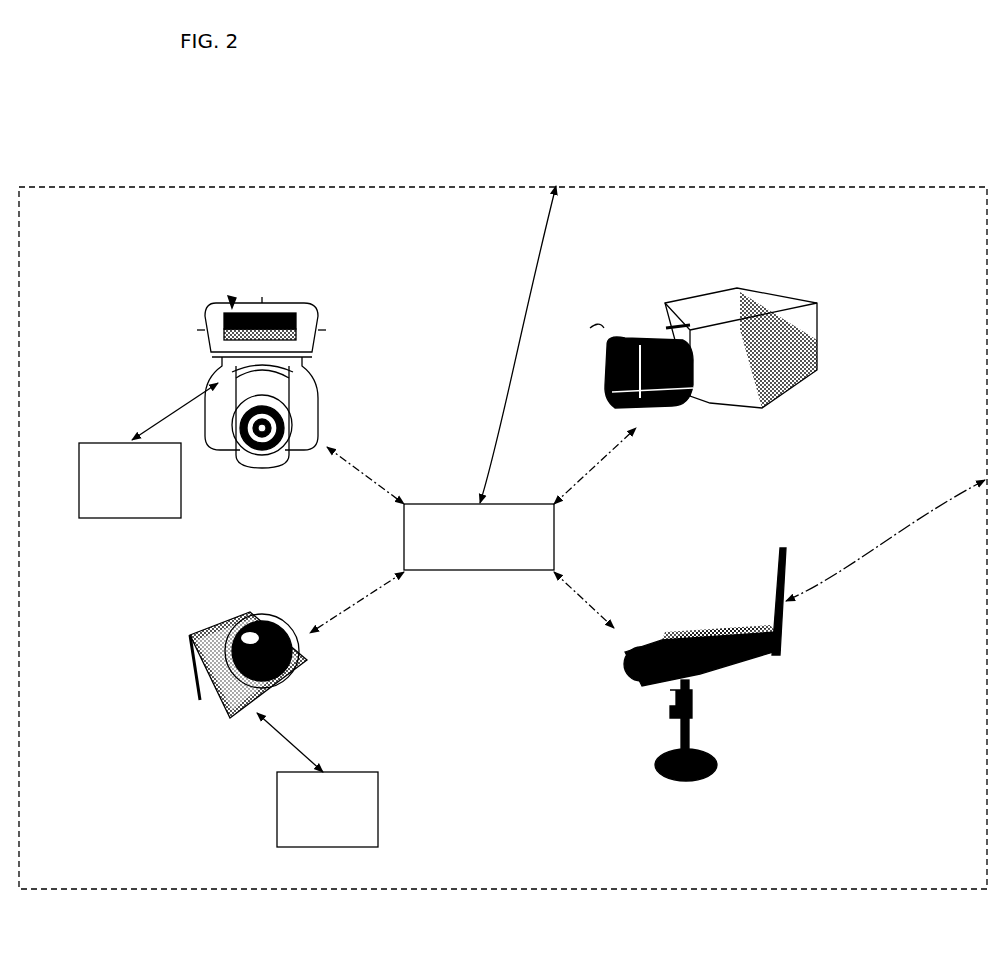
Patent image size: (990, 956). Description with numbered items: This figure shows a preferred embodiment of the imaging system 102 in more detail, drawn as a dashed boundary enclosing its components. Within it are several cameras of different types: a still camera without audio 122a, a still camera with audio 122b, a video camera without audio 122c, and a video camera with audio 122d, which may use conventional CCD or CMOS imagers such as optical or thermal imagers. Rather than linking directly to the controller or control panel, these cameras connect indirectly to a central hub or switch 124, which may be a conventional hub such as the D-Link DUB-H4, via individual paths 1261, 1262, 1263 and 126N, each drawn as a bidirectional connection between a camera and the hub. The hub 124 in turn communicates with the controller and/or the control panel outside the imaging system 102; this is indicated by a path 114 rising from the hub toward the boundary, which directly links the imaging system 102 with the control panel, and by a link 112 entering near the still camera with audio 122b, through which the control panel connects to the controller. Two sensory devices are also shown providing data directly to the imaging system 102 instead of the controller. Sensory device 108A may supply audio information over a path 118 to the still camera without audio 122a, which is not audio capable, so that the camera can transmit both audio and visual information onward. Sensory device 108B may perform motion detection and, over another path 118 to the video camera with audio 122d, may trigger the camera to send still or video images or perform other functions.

The imaging system 102 is at (196, 187).
The sensory device 108A is at (327, 809).
The sensory device 108B is at (130, 480).
The link 112 is at (912, 520).
The path 114 is at (532, 278).
The path 118 is at (170, 410).
The still camera without audio 122a is at (198, 650).
The still camera with audio 122b is at (716, 676).
The video camera without audio 122c is at (622, 332).
The video camera with audio 122d is at (199, 338).
The hub or switch 124 is at (479, 537).
The path 1261 is at (357, 603).
The path 1262 is at (582, 596).
The path 1263 is at (592, 464).
The path 126N is at (365, 472).